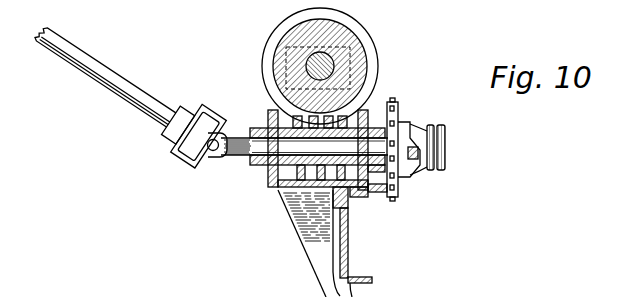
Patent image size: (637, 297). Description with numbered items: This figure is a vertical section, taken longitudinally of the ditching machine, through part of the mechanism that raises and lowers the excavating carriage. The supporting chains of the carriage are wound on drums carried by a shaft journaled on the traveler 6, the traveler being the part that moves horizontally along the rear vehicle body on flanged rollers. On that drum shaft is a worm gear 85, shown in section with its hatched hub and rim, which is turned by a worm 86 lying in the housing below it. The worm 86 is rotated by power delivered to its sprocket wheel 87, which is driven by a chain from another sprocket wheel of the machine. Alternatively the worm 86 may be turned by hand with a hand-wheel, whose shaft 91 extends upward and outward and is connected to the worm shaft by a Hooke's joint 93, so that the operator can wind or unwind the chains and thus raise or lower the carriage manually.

The shaft 91 is at (100, 46).
The Hooke's joint 93 is at (191, 160).
The worm gear 85 is at (288, 57).
The worm 86 is at (275, 185).
The sprocket wheel 87 is at (417, 92).
The traveler 6 is at (347, 242).